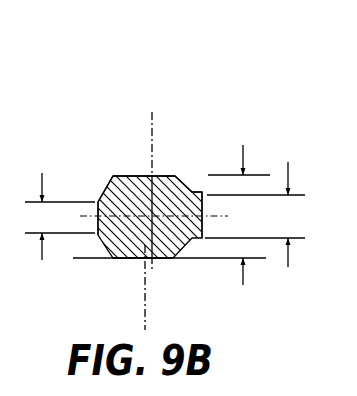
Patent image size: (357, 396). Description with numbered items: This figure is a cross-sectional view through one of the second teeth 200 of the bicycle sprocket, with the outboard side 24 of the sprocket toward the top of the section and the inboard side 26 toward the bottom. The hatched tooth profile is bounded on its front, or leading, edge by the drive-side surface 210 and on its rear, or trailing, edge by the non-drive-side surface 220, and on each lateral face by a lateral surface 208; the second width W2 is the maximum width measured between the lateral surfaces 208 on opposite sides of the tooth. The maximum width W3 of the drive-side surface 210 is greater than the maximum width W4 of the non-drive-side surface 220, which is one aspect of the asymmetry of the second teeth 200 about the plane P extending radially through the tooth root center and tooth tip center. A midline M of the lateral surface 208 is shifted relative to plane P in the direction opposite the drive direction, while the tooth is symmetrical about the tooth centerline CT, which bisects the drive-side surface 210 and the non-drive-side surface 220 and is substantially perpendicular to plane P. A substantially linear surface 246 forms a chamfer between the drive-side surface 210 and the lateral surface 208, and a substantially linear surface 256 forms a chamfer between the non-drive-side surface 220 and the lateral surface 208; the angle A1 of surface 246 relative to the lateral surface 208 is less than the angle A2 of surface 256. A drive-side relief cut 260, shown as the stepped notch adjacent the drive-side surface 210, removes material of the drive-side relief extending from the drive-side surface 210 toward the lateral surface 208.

The second teeth 200 is at (217, 105).
The outboard side 24 is at (178, 111).
The inboard side 26 is at (163, 281).
The lateral surface 208 is at (123, 175).
The surface 256 is at (112, 176).
The surface 246 is at (176, 177).
The drive-side relief cut 260 is at (194, 192).
The non-drive-side surface 220 is at (97, 224).
The drive-side surface 210 is at (203, 232).
The second width W2 is at (171, 228).
The maximum width of drive-side surface W3 is at (255, 228).
The maximum width of non-drive-side surface W4 is at (60, 230).
The tooth centerline CT is at (221, 209).
The plane P is at (162, 121).
The midline M is at (131, 321).
The angle A1 is at (196, 249).
The angle A2 is at (102, 239).